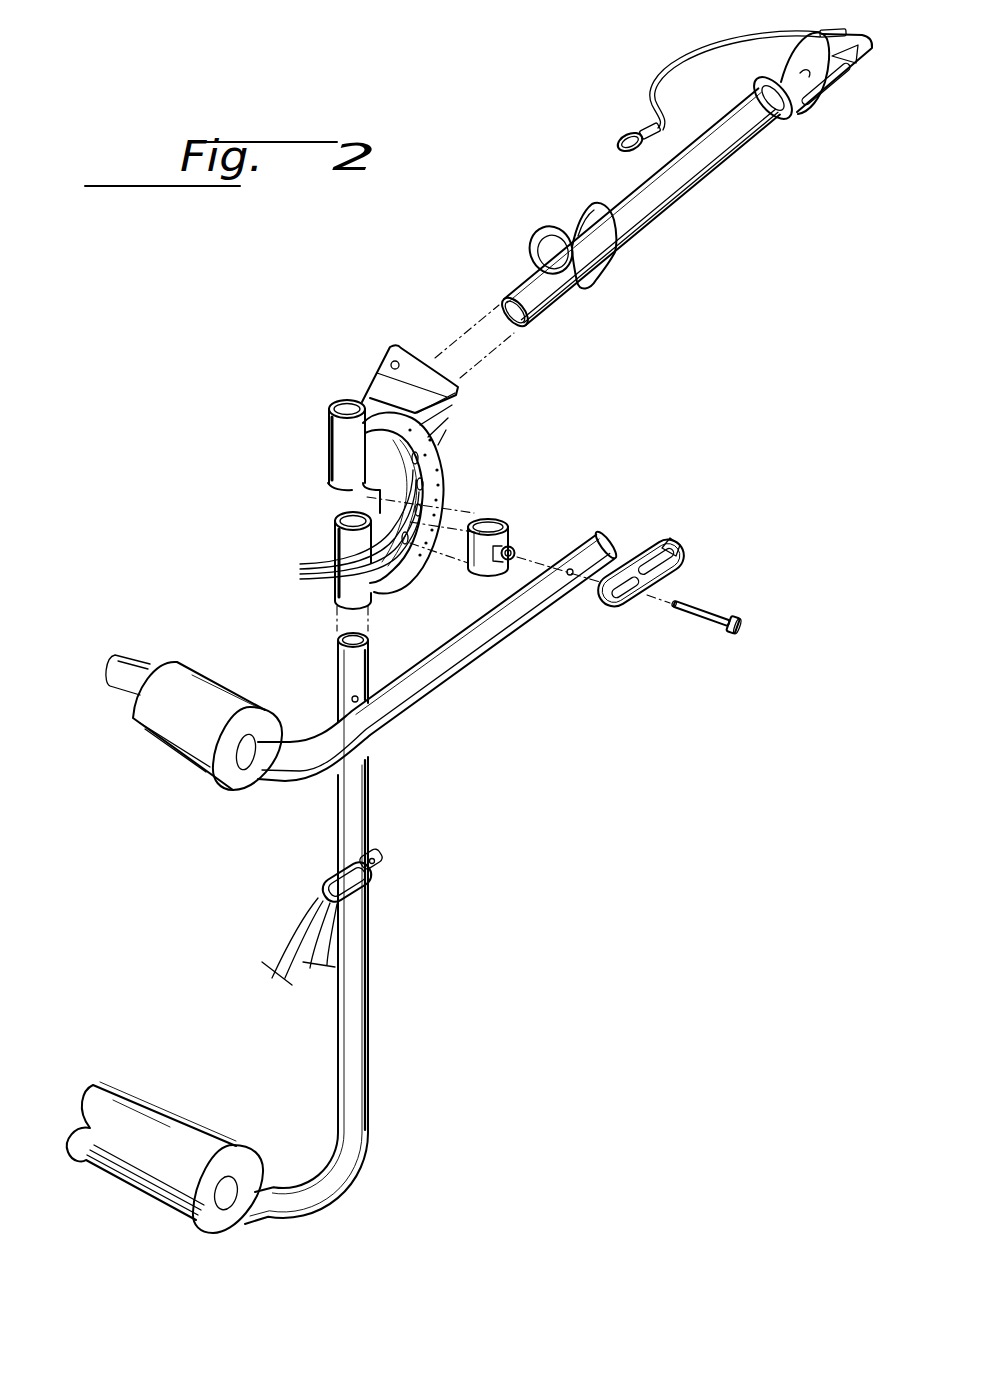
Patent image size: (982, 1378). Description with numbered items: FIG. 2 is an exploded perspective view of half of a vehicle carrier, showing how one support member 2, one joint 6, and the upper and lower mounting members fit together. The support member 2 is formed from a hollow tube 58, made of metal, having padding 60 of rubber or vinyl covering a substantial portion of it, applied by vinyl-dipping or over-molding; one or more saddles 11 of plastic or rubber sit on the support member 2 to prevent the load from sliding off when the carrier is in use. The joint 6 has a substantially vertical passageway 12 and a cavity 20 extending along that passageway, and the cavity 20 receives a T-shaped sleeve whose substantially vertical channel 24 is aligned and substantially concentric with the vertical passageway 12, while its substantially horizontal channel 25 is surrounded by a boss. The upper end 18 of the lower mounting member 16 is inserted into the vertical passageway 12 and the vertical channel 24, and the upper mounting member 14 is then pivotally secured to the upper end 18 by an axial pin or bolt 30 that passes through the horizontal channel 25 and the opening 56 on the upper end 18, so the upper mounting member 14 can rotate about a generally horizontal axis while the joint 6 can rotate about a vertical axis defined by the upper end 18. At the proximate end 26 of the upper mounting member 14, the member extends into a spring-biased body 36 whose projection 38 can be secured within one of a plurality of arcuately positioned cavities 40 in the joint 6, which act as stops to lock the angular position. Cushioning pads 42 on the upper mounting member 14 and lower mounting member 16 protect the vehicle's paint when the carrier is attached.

The support member 2 is at (752, 164).
The joint 6 is at (443, 441).
The saddle 11 is at (586, 220).
The vertical passageway 12 is at (375, 490).
The upper mounting member 14 is at (459, 598).
The lower mounting member 16 is at (350, 1186).
The upper end 18 is at (338, 635).
The cavity 20 is at (336, 498).
The vertical channel 24 is at (493, 522).
The horizontal channel 25 is at (518, 548).
The proximate end 26 is at (606, 532).
The axial pin or bolt 30 is at (715, 614).
The body 36 is at (640, 545).
The projection 38 is at (674, 541).
The arcuately positioned cavities 40 is at (341, 503).
The cushioning pads 42 is at (185, 765).
The opening 56 is at (350, 699).
The hollow tube 58 is at (498, 300).
The padding 60 is at (680, 192).